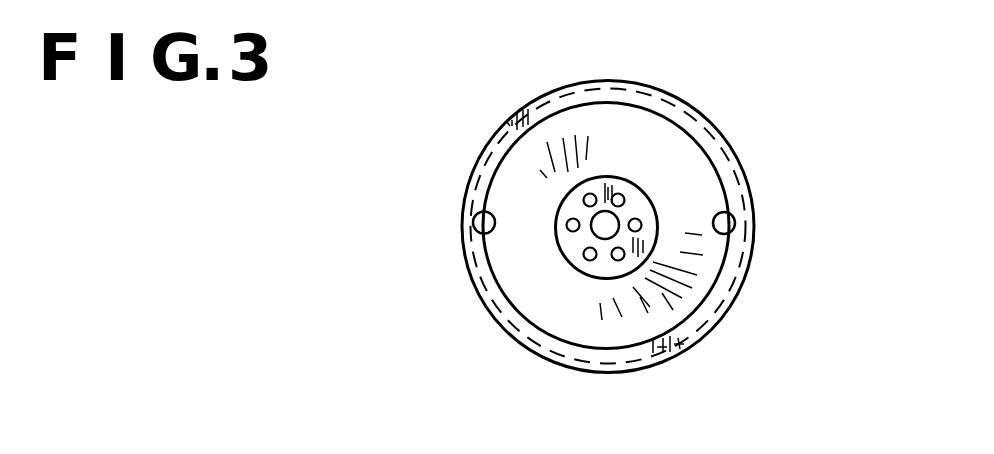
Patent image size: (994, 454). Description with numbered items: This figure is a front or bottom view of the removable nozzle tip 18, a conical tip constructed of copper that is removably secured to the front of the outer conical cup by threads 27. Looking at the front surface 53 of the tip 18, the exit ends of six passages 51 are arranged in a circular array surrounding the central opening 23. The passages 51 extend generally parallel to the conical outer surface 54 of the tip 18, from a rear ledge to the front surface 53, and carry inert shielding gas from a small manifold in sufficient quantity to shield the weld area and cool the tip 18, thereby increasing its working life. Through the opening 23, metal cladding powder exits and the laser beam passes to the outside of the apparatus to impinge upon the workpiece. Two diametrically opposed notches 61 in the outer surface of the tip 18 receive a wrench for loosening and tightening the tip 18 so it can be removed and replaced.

The conical tip 18 is at (474, 134).
The threads 27 is at (737, 155).
The conical outer surface 54 is at (667, 148).
The notches 61 is at (475, 217).
The front surface 53 is at (553, 237).
The opening 23 is at (594, 228).
The passages 51 is at (618, 195).